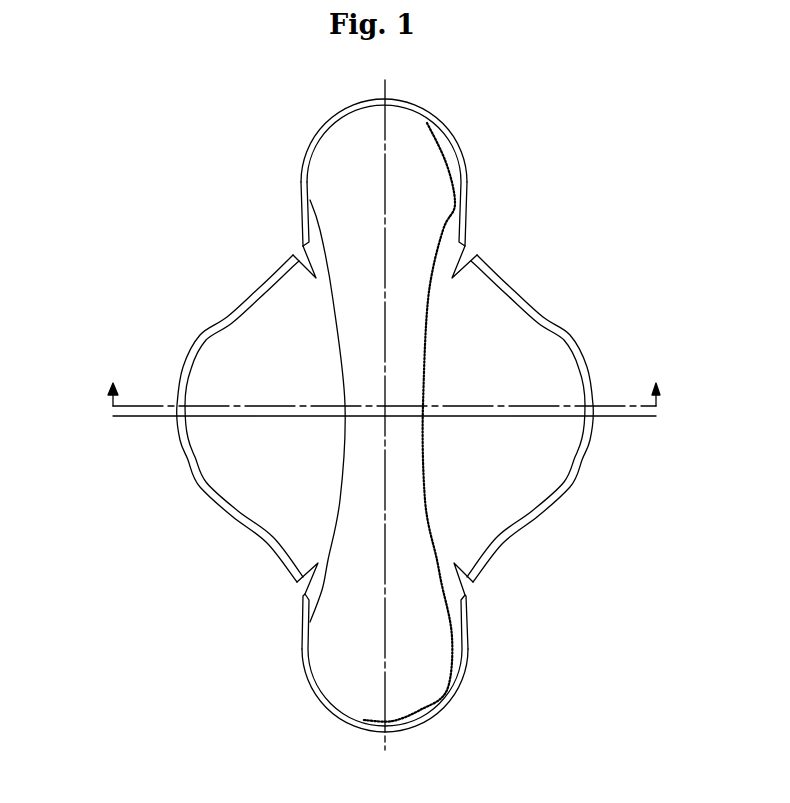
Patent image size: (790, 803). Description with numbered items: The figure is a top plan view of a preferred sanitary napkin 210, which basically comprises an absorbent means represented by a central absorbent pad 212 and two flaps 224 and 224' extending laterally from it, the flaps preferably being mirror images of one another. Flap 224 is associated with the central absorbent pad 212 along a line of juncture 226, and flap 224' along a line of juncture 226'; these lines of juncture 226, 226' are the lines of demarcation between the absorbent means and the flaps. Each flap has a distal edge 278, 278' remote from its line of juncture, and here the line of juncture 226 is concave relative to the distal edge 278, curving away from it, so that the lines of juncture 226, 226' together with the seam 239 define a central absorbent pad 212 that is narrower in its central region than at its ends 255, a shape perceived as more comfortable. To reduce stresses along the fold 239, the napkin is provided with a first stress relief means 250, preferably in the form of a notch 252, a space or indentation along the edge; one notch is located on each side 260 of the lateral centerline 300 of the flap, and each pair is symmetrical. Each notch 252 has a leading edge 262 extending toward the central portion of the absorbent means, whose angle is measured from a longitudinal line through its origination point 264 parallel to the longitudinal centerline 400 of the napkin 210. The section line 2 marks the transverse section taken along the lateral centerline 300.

The sanitary napkin 210 is at (548, 112).
The central absorbent pad 212 is at (468, 170).
The flap 224 is at (213, 418).
The flap 224' is at (556, 418).
The line of juncture 226 is at (270, 411).
The line of juncture 226' is at (462, 422).
The seam 239 is at (448, 126).
The first stress relief means 250 is at (263, 226).
The notch 252 is at (467, 250).
The end 255 is at (415, 727).
The side 260 is at (562, 404).
The leading edge 262 is at (304, 243).
The origination point 264 is at (308, 235).
The distal edge 278 is at (213, 419).
The distal edge 278' is at (556, 419).
The lateral centerline 300 is at (641, 417).
The longitudinal centerline 400 is at (386, 84).
The section line 2- 2 is at (384, 382).